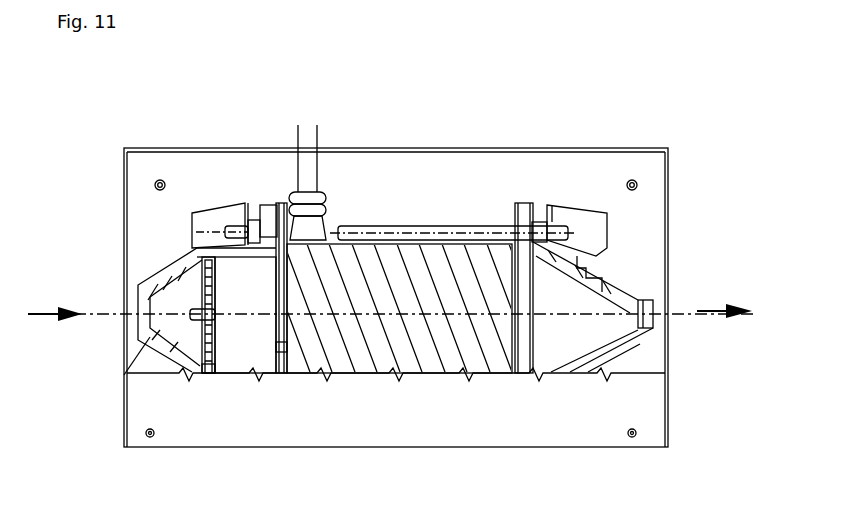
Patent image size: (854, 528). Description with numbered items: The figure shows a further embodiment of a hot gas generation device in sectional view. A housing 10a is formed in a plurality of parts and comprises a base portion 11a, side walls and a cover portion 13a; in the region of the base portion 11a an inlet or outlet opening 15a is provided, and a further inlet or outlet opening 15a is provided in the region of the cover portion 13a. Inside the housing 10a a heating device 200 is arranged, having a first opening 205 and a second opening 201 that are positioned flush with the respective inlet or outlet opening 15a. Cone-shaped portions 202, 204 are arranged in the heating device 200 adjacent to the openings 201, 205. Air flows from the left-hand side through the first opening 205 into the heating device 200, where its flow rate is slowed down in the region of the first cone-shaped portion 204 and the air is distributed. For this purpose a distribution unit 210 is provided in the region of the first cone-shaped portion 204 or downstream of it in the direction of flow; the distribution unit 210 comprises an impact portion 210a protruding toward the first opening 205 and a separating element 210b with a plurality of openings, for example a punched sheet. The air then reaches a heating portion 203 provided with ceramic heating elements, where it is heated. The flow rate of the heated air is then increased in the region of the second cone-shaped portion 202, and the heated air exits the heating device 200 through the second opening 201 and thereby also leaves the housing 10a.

The housing 10a is at (112, 189).
The base portion 11a is at (668, 255).
The cover portion 13a is at (124, 358).
The inlet or outlet opening 15a is at (125, 326).
The heating device 200 is at (462, 214).
The second opening 201 is at (640, 310).
The second cone-shaped portion 202 is at (563, 298).
The heating portion 203 is at (342, 303).
The first cone-shaped portion 204 is at (190, 290).
The first opening 205 is at (147, 302).
The distribution unit 210 is at (192, 378).
The impact portion 210a is at (124, 375).
The separating element 210b is at (208, 373).